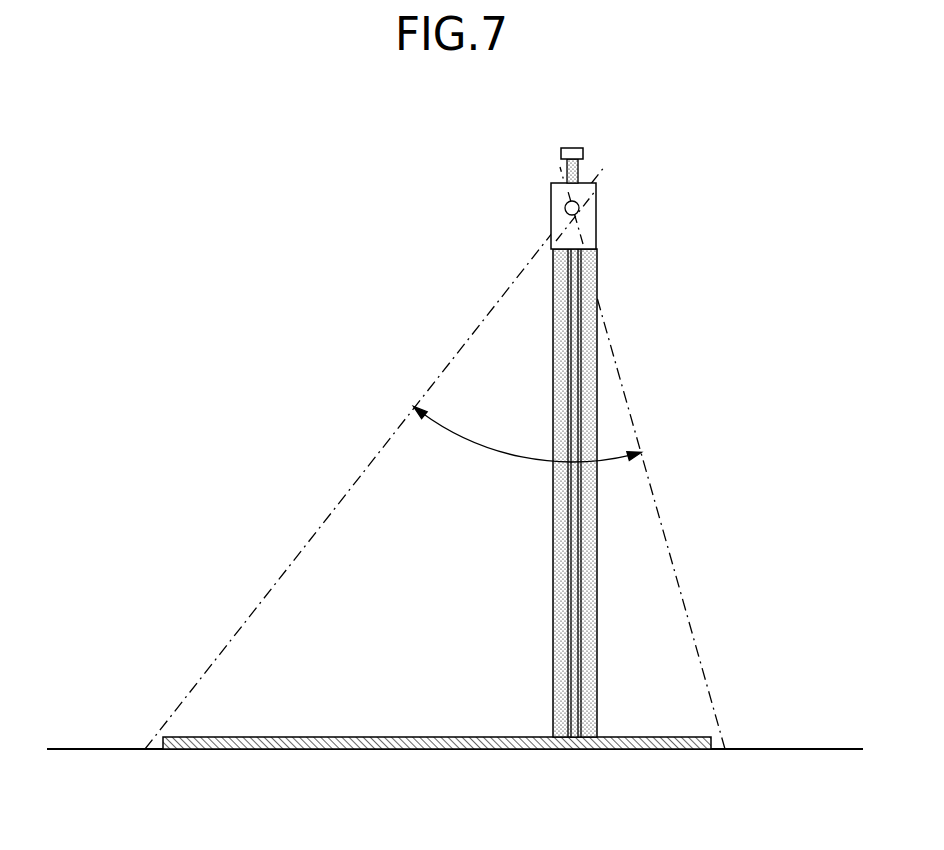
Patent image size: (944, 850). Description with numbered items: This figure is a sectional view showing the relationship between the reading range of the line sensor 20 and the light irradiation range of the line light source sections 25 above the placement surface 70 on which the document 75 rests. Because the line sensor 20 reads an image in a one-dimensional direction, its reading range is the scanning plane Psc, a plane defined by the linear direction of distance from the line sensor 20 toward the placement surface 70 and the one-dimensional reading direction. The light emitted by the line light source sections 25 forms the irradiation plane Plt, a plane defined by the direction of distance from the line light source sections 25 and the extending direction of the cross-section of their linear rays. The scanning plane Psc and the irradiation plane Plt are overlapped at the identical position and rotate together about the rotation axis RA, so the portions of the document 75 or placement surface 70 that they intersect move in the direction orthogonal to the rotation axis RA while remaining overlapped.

The line sensor 20 is at (573, 147).
The line light source section 25 is at (551, 213).
The rotation axis RA is at (580, 208).
The scanning plane Psc is at (574, 492).
The irradiation plane Plt is at (553, 549).
The placement surface 70 is at (83, 747).
The document 75 is at (296, 736).